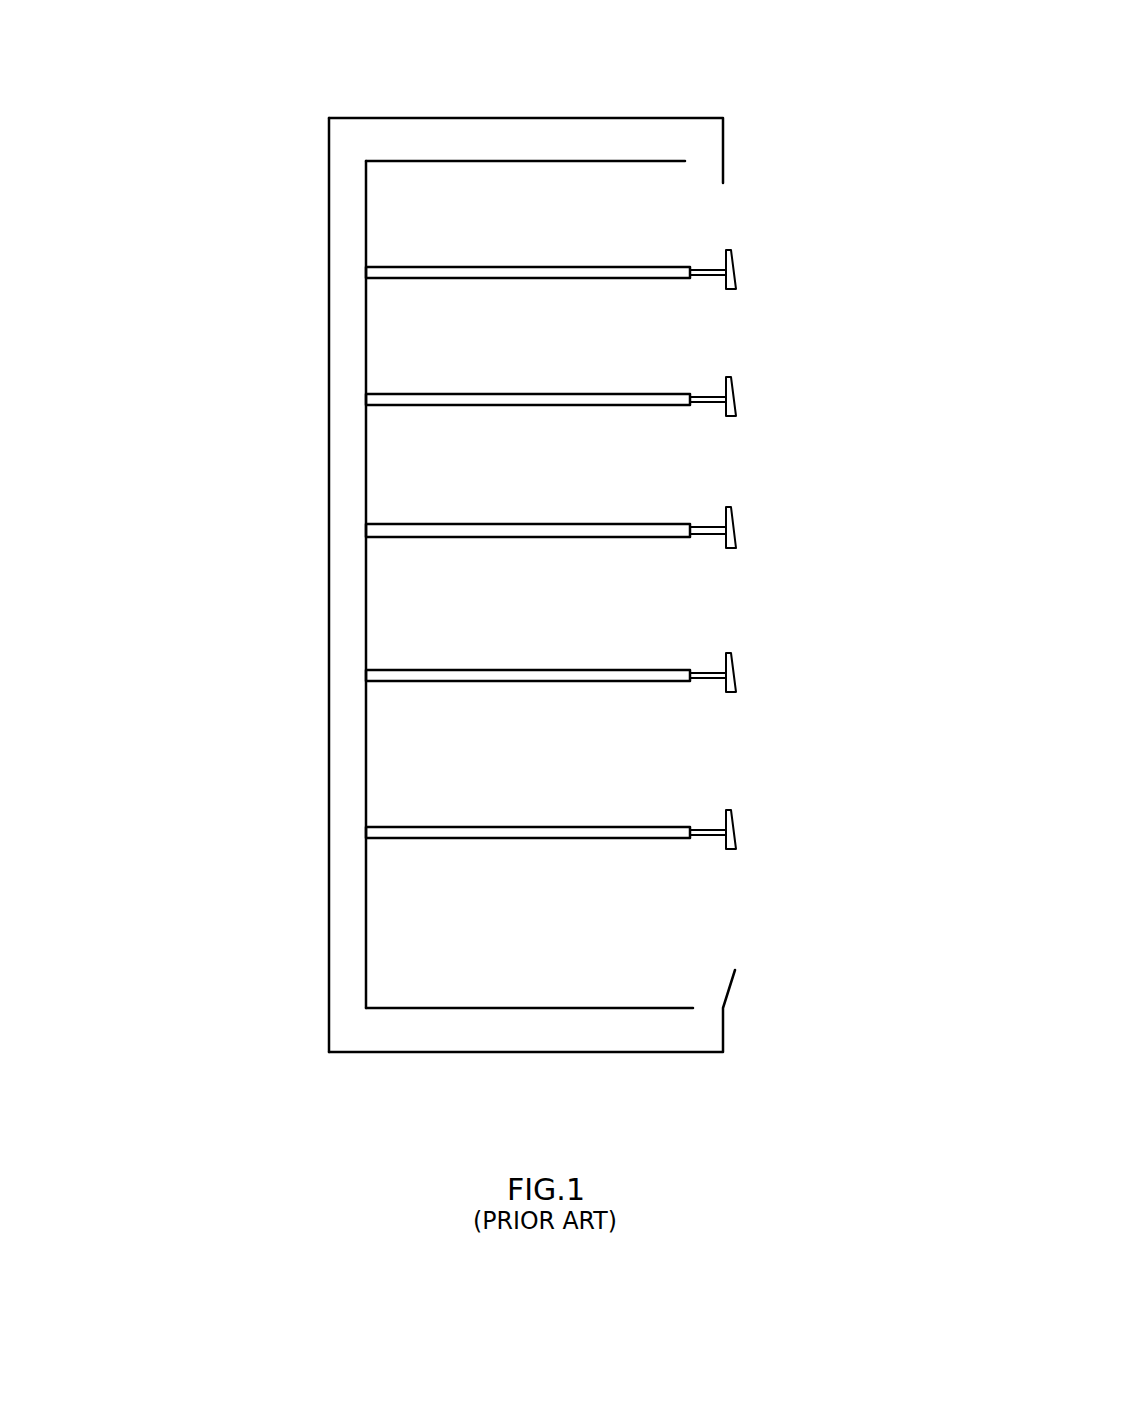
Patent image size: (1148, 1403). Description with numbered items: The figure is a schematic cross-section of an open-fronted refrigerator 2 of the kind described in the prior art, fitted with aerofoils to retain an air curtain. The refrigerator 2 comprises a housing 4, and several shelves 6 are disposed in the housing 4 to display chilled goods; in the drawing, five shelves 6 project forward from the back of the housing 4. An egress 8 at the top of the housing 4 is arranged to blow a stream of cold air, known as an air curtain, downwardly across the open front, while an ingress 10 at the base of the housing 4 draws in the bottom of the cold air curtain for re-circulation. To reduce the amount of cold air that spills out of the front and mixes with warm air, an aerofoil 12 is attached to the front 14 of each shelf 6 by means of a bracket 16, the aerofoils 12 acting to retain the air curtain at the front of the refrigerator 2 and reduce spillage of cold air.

The refrigerator 2 is at (200, 126).
The housing 4 is at (330, 640).
The shelf 6 is at (403, 399).
The egress 8 is at (703, 167).
The ingress 10 is at (708, 1013).
The aerofoil 12 is at (735, 263).
The front of shelf 14 is at (690, 672).
The bracket 16 is at (710, 827).